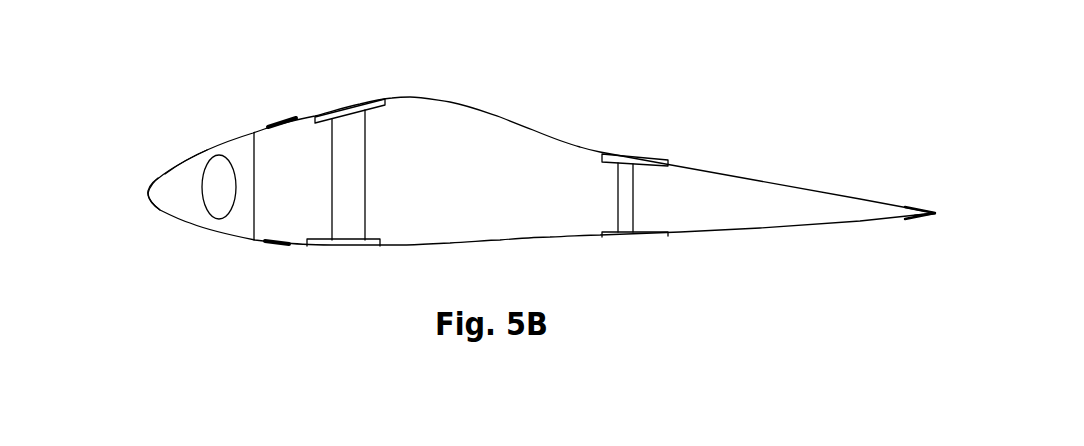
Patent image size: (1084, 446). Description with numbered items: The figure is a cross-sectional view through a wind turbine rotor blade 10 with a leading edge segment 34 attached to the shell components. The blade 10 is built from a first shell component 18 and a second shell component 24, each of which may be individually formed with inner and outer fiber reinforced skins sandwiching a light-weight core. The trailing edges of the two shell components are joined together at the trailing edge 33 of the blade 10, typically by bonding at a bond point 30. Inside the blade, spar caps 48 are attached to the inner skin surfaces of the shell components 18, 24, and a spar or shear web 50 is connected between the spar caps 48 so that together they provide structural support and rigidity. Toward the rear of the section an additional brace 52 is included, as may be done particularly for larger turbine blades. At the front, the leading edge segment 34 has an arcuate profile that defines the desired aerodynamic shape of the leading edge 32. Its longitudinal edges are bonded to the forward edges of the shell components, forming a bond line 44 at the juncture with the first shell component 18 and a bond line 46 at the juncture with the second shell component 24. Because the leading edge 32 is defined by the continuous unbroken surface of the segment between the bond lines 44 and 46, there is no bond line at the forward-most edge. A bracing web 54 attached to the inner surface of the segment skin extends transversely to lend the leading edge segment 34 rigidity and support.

The wind turbine rotor blade 10 is at (496, 208).
The first shell component 18 is at (540, 142).
The second shell component 24 is at (665, 238).
The bond point 30 is at (923, 225).
The leading edge 32 is at (131, 190).
The trailing edge 33 is at (915, 194).
The leading edge segment 34 is at (168, 149).
The bond line 44 is at (280, 125).
The bond line 46 is at (265, 250).
The spar cap 48 is at (360, 112).
The shear web 50 is at (378, 172).
The brace 52 is at (635, 205).
The bracing web 54 is at (187, 203).